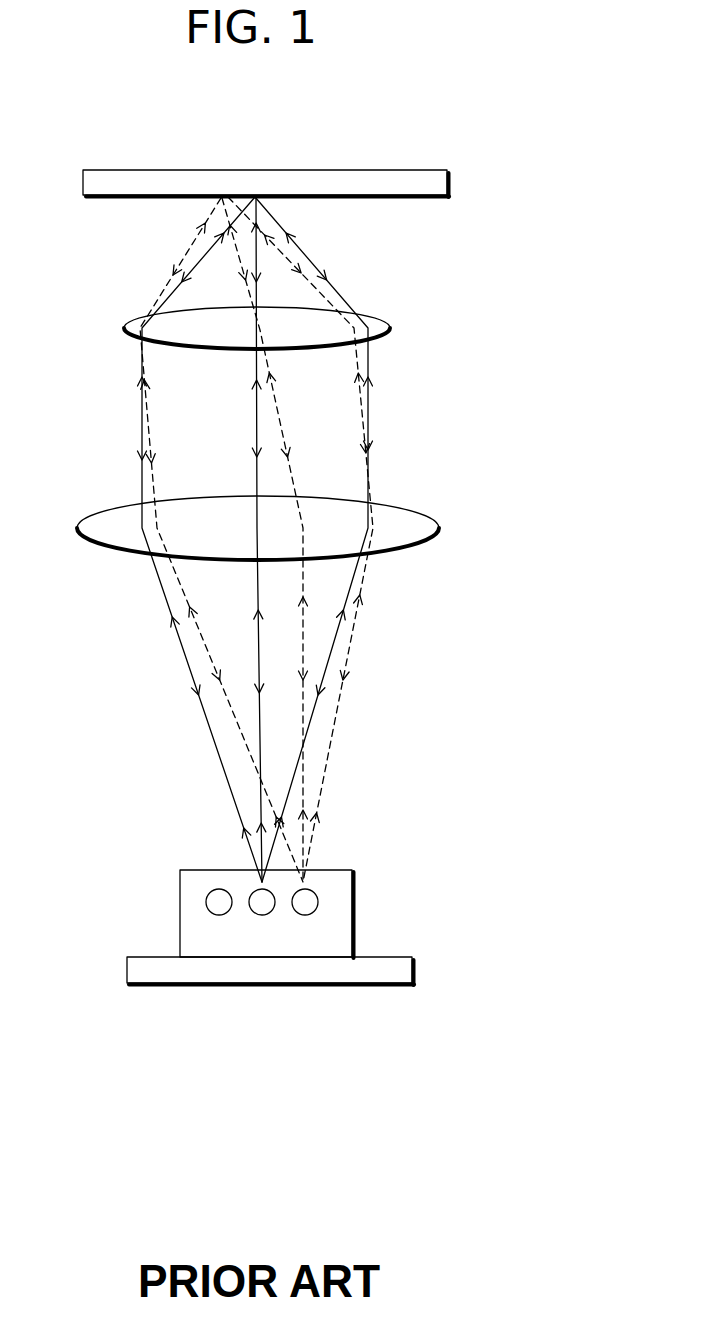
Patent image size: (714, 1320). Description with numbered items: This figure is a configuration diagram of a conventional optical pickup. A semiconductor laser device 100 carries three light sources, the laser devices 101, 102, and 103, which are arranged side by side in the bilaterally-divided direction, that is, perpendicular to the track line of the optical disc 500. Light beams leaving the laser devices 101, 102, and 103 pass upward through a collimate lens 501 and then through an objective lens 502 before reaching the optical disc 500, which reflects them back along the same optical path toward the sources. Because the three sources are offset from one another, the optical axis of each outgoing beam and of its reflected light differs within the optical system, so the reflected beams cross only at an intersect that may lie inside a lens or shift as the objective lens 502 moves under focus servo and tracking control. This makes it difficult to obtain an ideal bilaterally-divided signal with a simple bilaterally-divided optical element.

The semiconductor laser device 100 is at (370, 972).
The laser device 101 is at (217, 916).
The laser device 102 is at (262, 916).
The laser device 103 is at (305, 916).
The optical disc 500 is at (165, 170).
The collimate lens 501 is at (417, 525).
The objective lens 502 is at (387, 323).